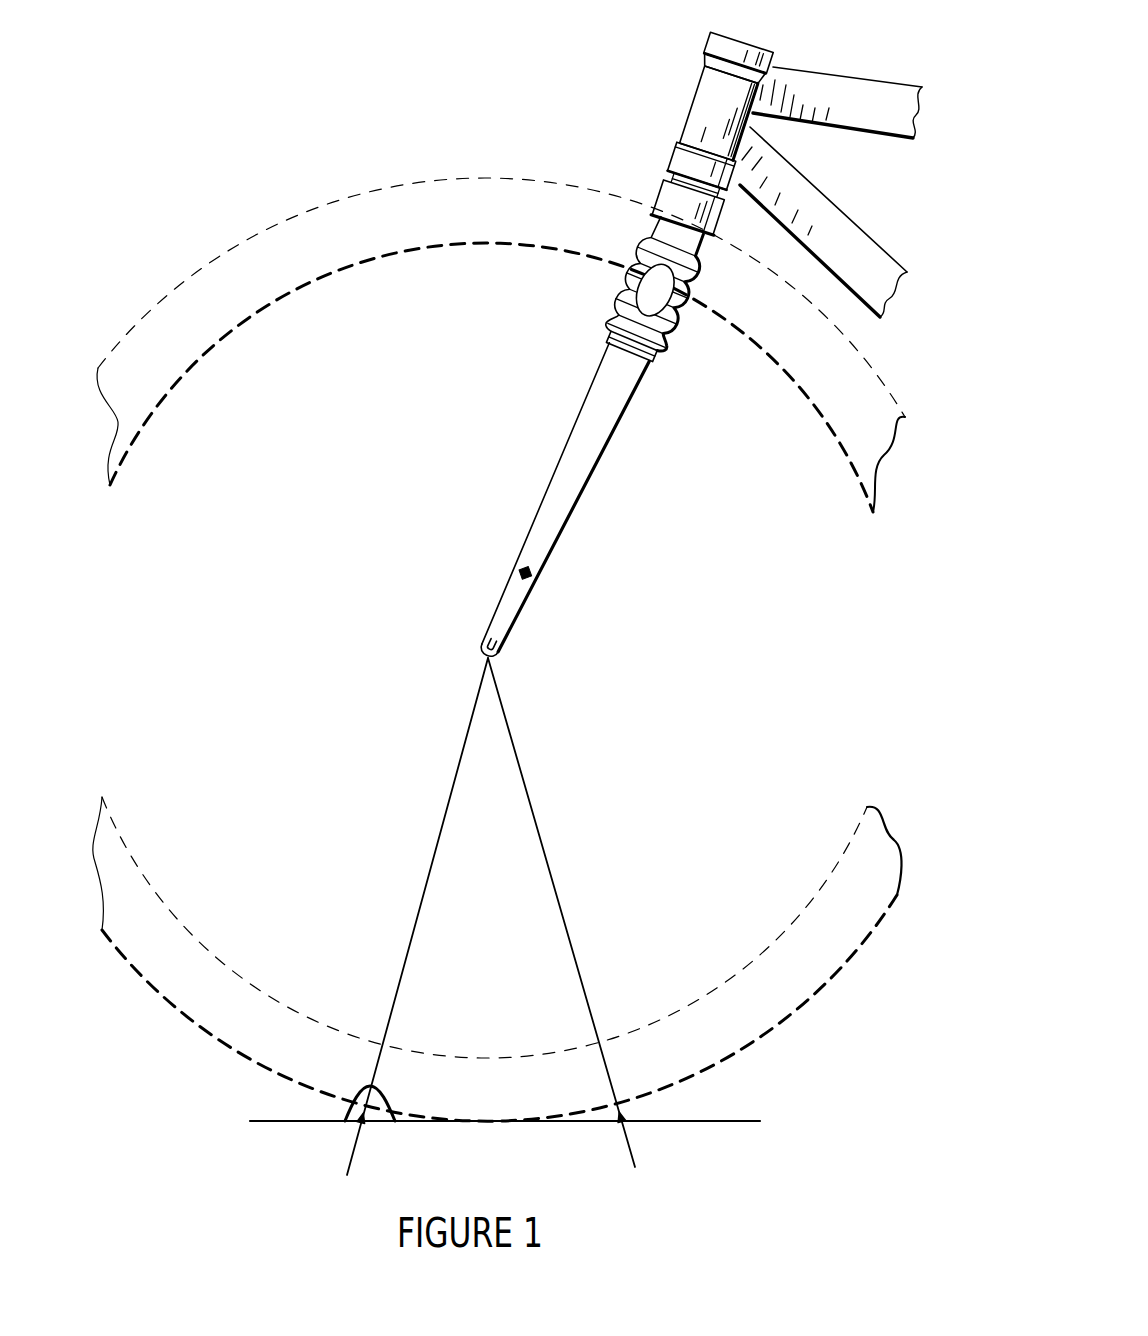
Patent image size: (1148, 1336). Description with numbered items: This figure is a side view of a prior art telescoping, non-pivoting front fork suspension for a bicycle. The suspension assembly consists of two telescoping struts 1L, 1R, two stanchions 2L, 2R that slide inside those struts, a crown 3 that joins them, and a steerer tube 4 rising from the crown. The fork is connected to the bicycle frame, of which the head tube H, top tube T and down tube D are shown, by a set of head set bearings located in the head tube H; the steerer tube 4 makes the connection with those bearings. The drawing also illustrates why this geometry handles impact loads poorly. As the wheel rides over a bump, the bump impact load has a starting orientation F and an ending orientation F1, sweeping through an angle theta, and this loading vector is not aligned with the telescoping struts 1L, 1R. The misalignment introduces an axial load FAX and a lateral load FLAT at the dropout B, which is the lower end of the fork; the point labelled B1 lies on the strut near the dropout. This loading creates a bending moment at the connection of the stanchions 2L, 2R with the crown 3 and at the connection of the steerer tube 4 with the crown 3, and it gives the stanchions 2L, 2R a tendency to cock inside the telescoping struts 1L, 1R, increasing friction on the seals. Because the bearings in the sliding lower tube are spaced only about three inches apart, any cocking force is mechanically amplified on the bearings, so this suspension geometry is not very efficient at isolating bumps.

The head tube H is at (718, 88).
The steerer tube 4 is at (695, 185).
The crown 3 is at (688, 208).
The top tube T is at (834, 88).
The down tube D is at (825, 223).
The left stanchion 2L is at (658, 292).
The right stanchion 2R is at (656, 289).
The left telescoping strut 1L is at (552, 501).
The right telescoping strut 1R is at (573, 506).
The dropout B is at (837, 968).
The bone contact point B1 is at (525, 573).
The axial load FAX is at (483, 668).
The lateral load FLAT is at (495, 668).
The starting orientation of bump impact load F is at (417, 918).
The ending orientation of bump impact load F1 is at (580, 918).